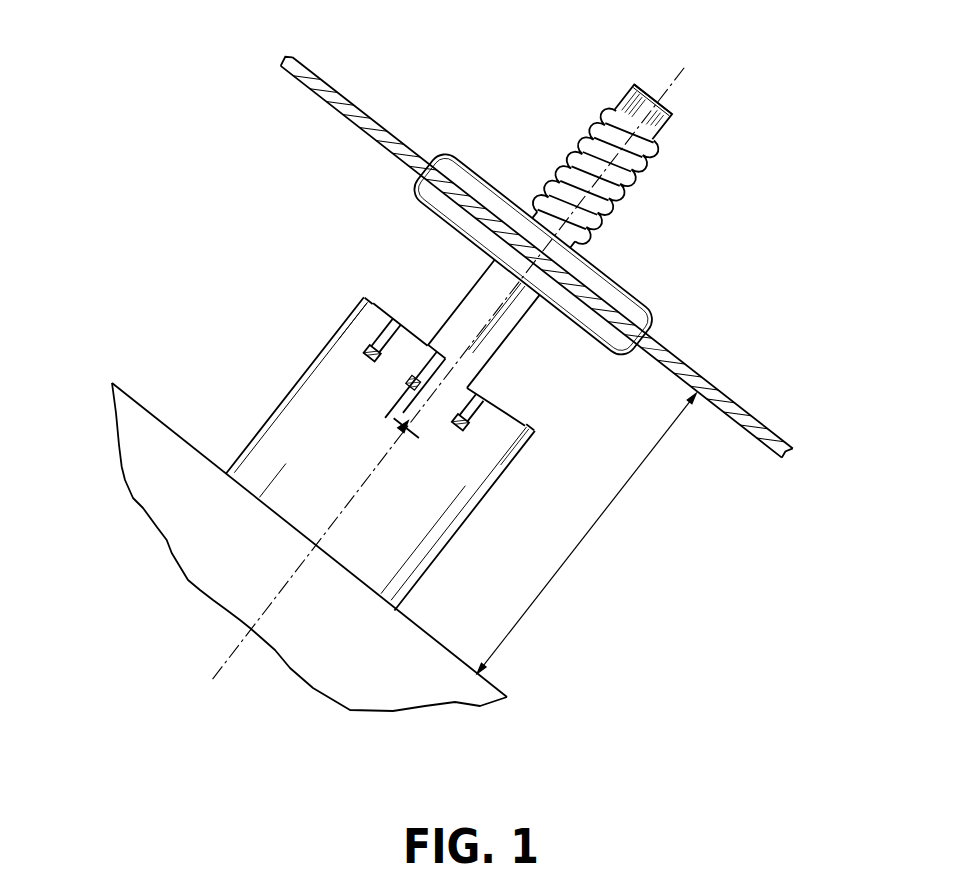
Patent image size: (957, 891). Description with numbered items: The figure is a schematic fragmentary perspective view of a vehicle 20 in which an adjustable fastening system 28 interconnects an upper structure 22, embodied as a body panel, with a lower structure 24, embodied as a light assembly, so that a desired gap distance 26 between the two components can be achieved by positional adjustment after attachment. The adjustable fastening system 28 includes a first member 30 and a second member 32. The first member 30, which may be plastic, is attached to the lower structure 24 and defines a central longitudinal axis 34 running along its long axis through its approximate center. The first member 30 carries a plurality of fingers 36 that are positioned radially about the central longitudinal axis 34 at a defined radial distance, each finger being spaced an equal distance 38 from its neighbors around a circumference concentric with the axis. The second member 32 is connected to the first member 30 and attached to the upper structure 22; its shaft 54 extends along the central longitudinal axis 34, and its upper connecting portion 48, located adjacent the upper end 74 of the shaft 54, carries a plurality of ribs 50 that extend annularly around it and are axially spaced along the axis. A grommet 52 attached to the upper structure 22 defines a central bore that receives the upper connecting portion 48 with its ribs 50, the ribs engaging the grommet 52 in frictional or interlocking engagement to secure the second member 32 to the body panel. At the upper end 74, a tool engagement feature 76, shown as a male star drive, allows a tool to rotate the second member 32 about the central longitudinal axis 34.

The vehicle 20 is at (118, 204).
The upper structure 22 is at (314, 90).
The lower structure 24 is at (158, 457).
The gap distance 26 is at (600, 530).
The adjustable fastening system 28 is at (432, 307).
The first member 30 is at (294, 441).
The second member 32 is at (518, 320).
The central longitudinal axis 34 is at (226, 655).
The fingers 36 is at (408, 330).
The equal distance 38 is at (384, 401).
The upper connecting portion 48 is at (639, 177).
The ribs 50 is at (628, 194).
The grommet 52 is at (632, 305).
The shaft 54 is at (489, 287).
The upper end 74 is at (669, 103).
The tool engagement feature 76 is at (668, 126).